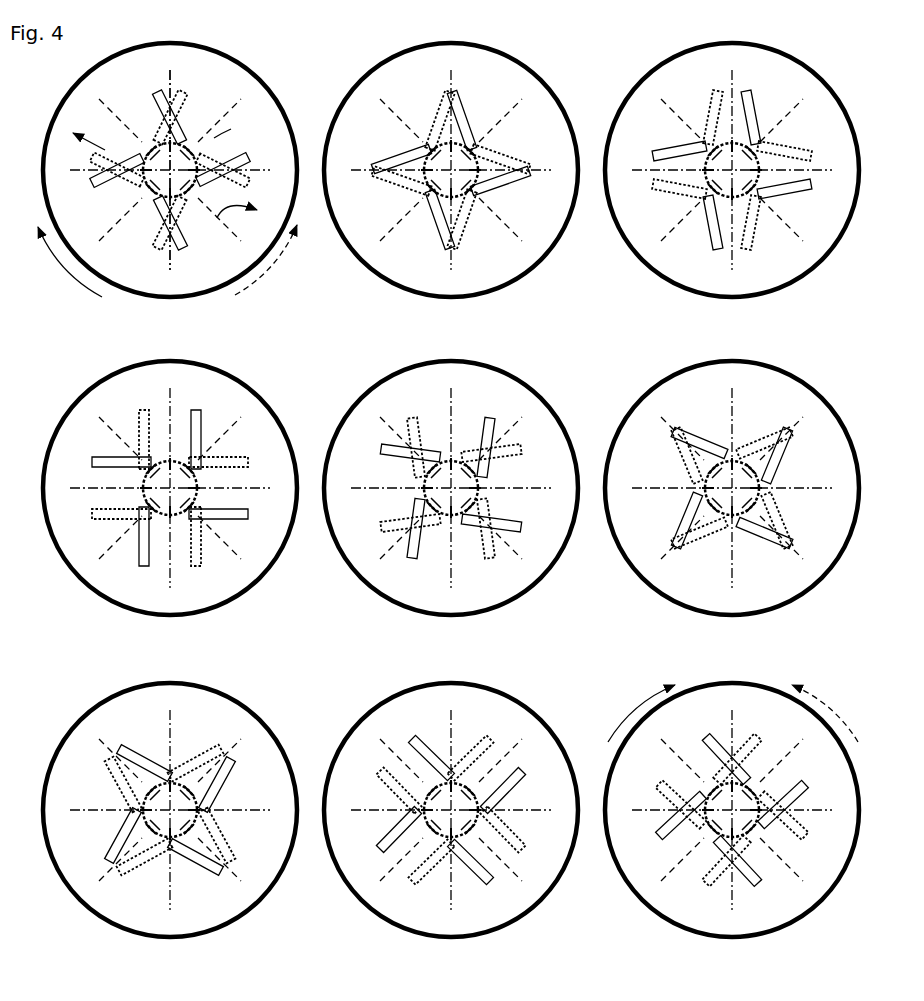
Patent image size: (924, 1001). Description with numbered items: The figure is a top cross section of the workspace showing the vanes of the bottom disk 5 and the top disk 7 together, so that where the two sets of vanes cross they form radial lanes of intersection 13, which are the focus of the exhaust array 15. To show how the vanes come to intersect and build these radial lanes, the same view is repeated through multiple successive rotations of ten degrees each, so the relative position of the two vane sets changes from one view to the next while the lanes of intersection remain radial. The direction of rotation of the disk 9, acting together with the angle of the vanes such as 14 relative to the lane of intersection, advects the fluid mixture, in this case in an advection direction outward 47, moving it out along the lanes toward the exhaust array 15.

The bottom disk 5 is at (188, 97).
The top disk 7 is at (464, 484).
The direction of rotation of the disk 9 is at (67, 270).
The radial lanes of intersection 13 is at (170, 76).
The vane 14 is at (411, 113).
The exhaust array 15 is at (143, 222).
The advection direction outward 47 is at (165, 187).